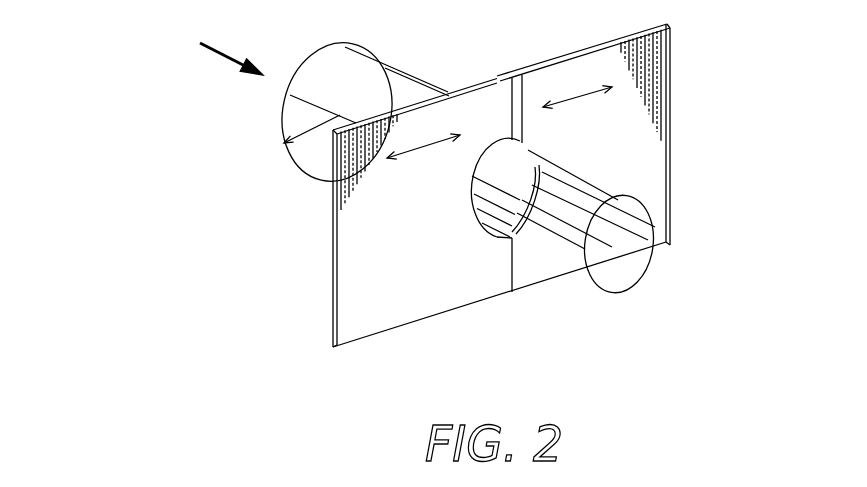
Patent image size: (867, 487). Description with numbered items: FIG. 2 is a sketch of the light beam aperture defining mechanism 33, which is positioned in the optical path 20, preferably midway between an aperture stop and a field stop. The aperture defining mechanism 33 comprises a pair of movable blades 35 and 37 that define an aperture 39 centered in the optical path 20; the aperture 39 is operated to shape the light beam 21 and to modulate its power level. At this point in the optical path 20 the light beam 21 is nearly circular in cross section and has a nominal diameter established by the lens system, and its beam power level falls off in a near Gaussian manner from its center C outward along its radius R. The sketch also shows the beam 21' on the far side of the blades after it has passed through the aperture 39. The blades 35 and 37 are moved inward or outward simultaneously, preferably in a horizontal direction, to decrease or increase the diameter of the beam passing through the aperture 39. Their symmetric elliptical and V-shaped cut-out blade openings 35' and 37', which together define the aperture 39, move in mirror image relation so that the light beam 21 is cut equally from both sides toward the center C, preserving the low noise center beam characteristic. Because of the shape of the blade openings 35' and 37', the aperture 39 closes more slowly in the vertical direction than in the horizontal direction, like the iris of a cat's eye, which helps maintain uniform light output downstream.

The optical path 20 is at (227, 57).
The light beam 21 is at (359, 96).
The second disc 21' is at (660, 247).
The aperture defining mechanism 33 is at (619, 364).
The movable blade 35 is at (415, 213).
The blade opening 35' is at (488, 292).
The movable blade 37 is at (583, 134).
The blade opening 37' is at (539, 71).
The aperture 39 is at (490, 163).
The center C is at (336, 114).
The radius R is at (312, 123).